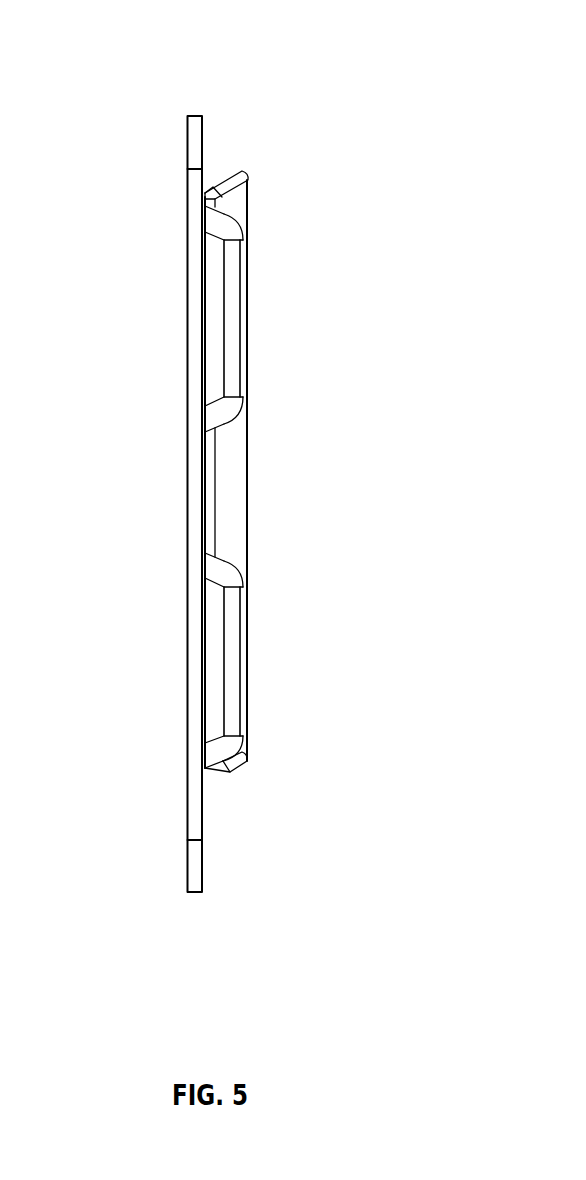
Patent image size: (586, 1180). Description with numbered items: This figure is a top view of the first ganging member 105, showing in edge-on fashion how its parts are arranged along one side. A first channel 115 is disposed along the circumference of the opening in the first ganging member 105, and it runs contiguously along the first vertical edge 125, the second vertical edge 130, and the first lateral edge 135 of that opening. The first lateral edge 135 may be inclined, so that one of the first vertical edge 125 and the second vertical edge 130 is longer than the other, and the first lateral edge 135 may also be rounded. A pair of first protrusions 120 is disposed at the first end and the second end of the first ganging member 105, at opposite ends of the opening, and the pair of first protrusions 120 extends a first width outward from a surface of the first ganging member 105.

The first ganging member 105 is at (199, 116).
The first channel 115 is at (221, 186).
The pair of first protrusions 120 is at (222, 316).
The first vertical edge 125 is at (236, 773).
The second vertical edge 130 is at (227, 176).
The first lateral edge 135 is at (248, 514).